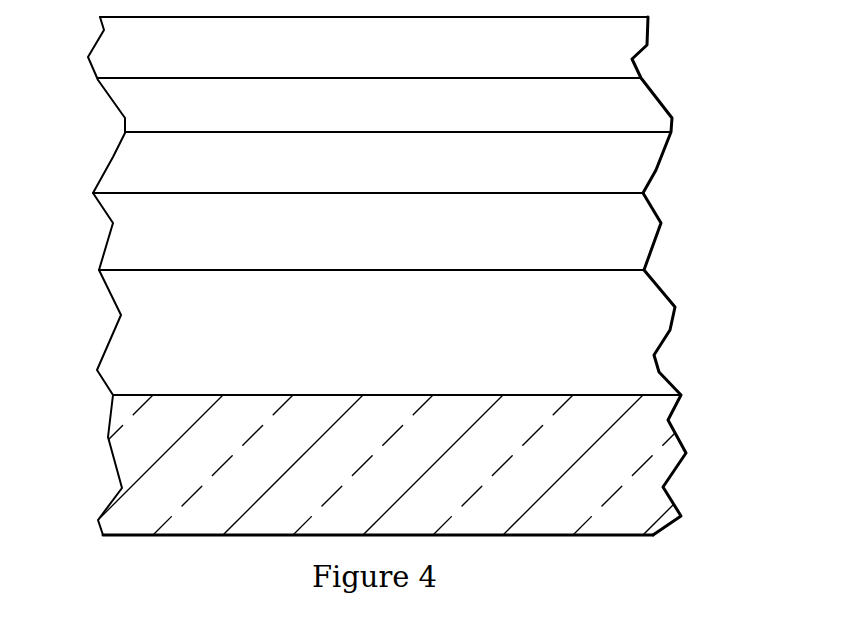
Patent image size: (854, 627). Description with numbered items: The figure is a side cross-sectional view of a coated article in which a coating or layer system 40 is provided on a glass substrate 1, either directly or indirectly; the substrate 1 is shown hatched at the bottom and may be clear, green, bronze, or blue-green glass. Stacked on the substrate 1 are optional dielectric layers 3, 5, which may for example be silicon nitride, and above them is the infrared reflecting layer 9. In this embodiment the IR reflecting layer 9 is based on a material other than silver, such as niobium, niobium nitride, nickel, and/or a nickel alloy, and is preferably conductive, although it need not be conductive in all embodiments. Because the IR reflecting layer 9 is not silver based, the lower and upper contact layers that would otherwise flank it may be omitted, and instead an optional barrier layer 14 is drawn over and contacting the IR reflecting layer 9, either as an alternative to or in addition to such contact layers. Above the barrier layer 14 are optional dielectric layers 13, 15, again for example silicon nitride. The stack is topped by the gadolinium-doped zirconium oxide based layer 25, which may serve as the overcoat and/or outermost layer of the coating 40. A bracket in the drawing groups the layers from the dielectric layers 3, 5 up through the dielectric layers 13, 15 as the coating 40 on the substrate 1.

The substrate 1 is at (650, 478).
The dielectric layer 3 is at (429, 351).
The dielectric layer 5 is at (642, 330).
The IR reflecting layer 9 is at (632, 230).
The dielectric layer 13 is at (449, 110).
The optional barrier layer 14 is at (637, 163).
The dielectric layer 15 is at (640, 105).
The Gd-doped zirconium oxide based layer 25 is at (621, 43).
The coating 40 is at (80, 397).